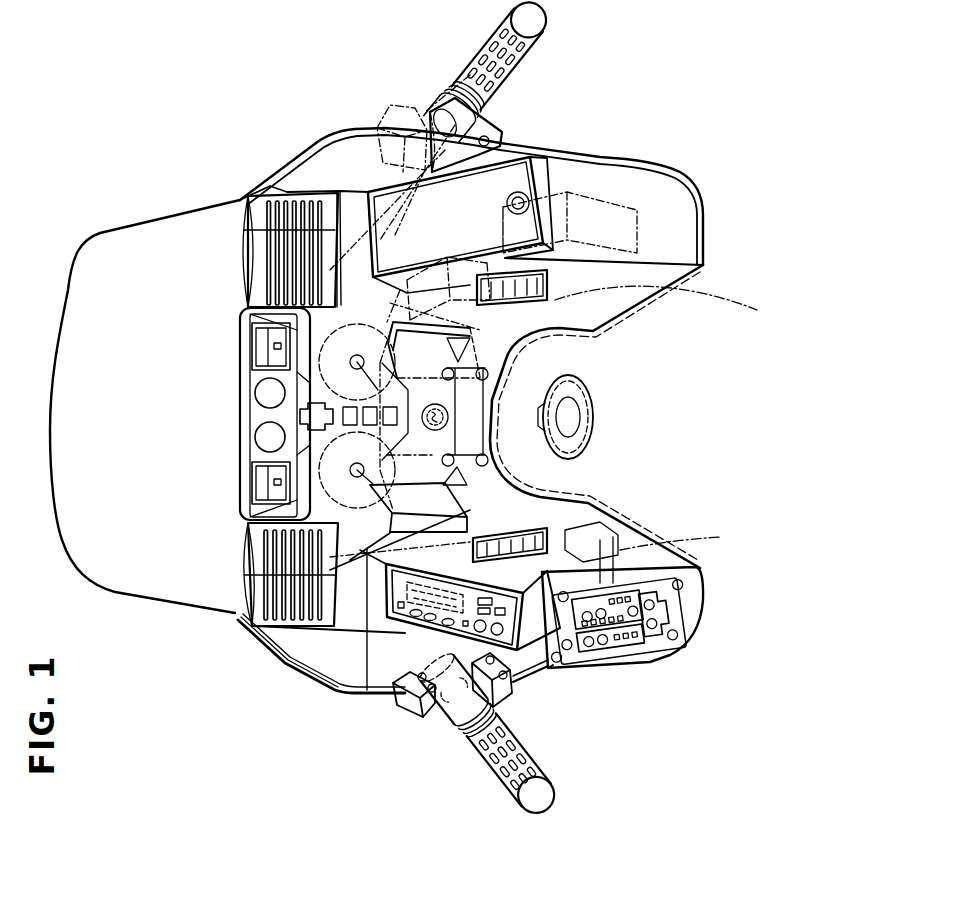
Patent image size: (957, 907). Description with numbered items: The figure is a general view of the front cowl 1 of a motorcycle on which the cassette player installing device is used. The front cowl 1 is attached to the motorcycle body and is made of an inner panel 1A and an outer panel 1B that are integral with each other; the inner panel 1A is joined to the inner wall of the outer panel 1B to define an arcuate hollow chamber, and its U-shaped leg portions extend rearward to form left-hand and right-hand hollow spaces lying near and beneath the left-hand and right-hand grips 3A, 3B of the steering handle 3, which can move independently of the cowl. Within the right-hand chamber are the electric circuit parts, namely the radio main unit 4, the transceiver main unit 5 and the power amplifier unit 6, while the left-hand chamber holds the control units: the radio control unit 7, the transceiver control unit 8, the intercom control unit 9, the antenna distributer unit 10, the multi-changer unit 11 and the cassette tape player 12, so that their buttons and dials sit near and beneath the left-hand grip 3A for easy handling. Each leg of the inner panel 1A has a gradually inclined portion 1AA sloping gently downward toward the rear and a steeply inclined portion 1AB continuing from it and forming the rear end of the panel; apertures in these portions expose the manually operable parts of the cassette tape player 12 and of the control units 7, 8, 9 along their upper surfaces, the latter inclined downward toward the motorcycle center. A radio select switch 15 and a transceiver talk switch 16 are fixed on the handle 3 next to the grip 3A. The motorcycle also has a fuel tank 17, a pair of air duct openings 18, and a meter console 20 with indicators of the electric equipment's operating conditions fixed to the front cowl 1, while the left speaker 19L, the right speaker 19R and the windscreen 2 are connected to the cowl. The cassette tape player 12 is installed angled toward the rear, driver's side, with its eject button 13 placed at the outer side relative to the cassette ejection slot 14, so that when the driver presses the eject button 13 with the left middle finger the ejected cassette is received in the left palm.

The front cowl 1 is at (290, 665).
The inner panel 1A is at (655, 292).
The outer panel 1B is at (557, 148).
The gradually inclined portion 1AA is at (395, 620).
The steeply inclined portion 1AB is at (570, 663).
The windscreen 2 is at (153, 233).
The steering handle 3 is at (363, 240).
The left-hand grip 3A is at (545, 800).
The right-hand grip 3B is at (547, 27).
The radio main unit 4 is at (593, 200).
The transceiver main unit 5 is at (445, 275).
The power amplifier unit 6 is at (397, 327).
The radio control unit 7 is at (633, 593).
The transceiver control unit 8 is at (613, 647).
The intercom control unit 9 is at (660, 638).
The antenna distributer unit 10 is at (590, 557).
The multi-changer unit 11 is at (373, 513).
The cassette tape player 12 is at (372, 640).
The eject button 13 is at (435, 622).
The cassette ejection slot 14 is at (470, 550).
The radio select switch 15 is at (421, 717).
The transceiver talk switch 16 is at (513, 693).
The fuel tank 17 is at (732, 312).
The air duct openings 18 is at (575, 307).
The right speaker 19R is at (257, 247).
The left speaker 19L is at (247, 618).
The meter console 20 is at (247, 416).